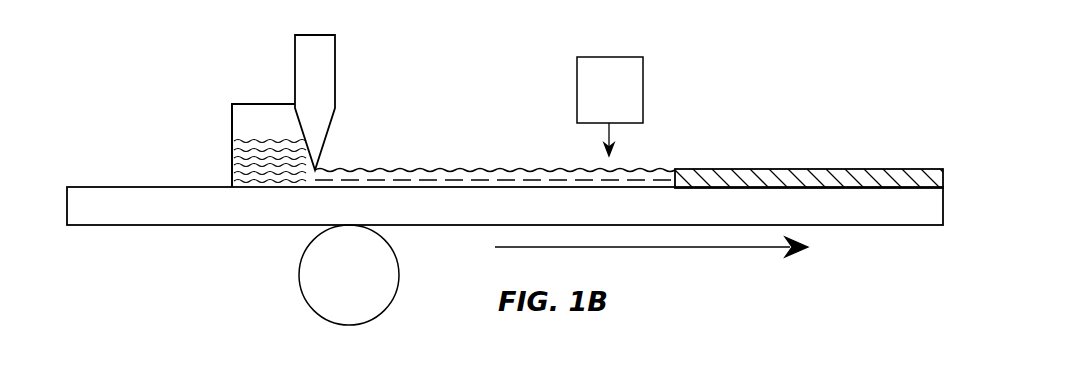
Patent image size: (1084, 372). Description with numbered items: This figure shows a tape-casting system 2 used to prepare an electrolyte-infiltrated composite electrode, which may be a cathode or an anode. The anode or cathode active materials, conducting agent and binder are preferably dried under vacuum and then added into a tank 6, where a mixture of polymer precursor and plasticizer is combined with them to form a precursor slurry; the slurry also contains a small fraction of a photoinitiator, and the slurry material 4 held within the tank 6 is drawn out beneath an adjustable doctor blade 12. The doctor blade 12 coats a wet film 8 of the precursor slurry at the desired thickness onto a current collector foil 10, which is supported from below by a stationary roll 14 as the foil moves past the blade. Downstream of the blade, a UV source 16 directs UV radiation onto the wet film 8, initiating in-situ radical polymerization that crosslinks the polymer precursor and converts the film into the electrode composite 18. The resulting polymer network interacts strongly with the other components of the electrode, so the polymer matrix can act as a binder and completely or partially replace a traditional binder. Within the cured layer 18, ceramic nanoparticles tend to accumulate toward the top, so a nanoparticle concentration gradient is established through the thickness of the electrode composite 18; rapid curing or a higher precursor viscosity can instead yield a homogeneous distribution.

The tape-casting system 2 is at (740, 101).
The powder material 4 is at (232, 160).
The tank 6 is at (231, 108).
The wet film 8 is at (422, 178).
The current collector foil 10 is at (133, 200).
The adjustable doctor blade 12 is at (338, 68).
The stationary roll 14 is at (391, 263).
The UV source 16 is at (610, 106).
The electrode composite 18 is at (838, 181).